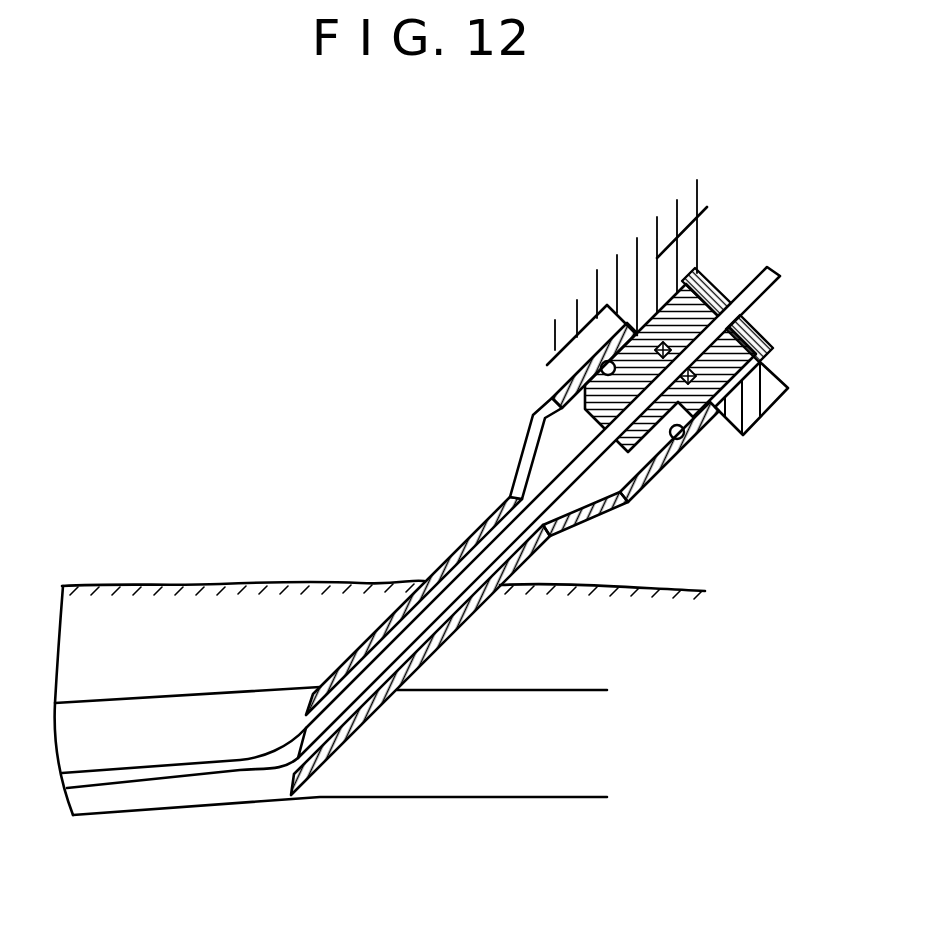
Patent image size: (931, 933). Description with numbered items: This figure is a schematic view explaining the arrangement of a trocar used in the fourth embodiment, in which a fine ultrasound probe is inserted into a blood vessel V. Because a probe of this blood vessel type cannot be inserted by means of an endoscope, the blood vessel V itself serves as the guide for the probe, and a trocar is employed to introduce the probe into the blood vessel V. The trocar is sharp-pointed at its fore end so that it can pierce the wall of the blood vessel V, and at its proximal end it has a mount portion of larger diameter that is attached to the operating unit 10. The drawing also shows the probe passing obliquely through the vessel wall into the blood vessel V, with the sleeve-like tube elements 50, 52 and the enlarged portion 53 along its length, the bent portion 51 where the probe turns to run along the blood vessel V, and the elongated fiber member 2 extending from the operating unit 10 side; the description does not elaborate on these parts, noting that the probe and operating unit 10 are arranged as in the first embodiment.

The optical fiber 2 is at (763, 293).
The operating unit 10 is at (688, 220).
The outer protective tube 50 is at (366, 740).
The bent fiber portion 51 is at (288, 786).
The inner tube 52 is at (461, 552).
The enlarged portion of inner tube 53 is at (552, 402).
The blood vessel V is at (513, 770).